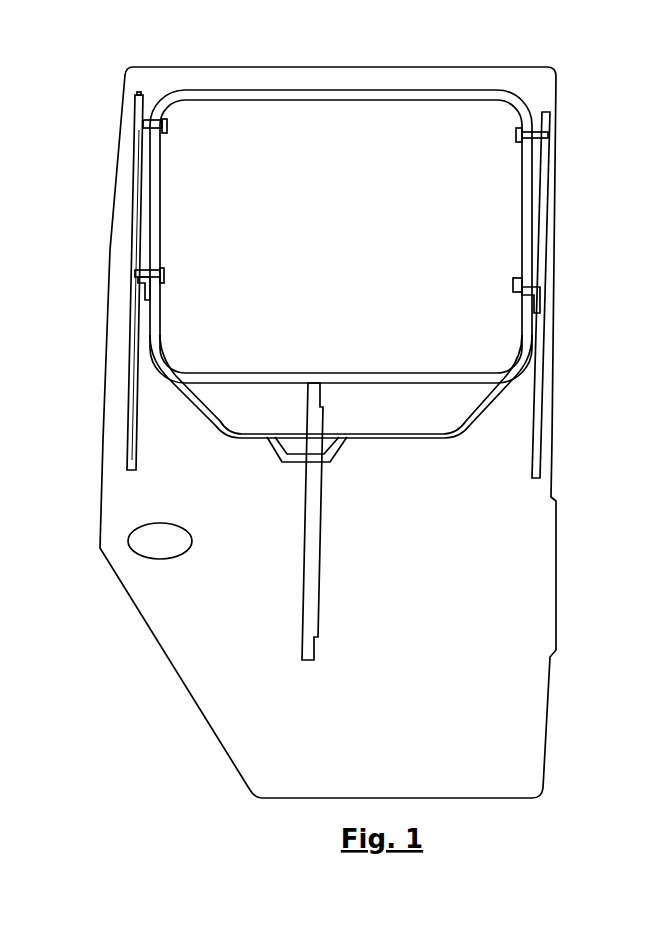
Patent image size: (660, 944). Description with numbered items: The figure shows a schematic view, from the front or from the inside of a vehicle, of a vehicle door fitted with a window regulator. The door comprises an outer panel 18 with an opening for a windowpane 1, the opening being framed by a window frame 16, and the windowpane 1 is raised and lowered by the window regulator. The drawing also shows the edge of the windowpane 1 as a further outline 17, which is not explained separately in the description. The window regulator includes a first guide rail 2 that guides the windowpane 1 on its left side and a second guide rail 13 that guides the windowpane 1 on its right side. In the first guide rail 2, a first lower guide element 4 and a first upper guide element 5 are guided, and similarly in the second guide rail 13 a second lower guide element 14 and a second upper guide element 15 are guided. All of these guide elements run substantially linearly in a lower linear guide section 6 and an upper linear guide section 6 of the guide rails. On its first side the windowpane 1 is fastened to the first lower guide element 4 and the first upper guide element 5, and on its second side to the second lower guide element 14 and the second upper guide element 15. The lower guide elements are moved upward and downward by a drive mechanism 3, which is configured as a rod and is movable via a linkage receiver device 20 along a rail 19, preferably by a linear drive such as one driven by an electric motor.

The windowpane 1 is at (336, 267).
The first guide rail 2 is at (125, 398).
The drive mechanism 3 is at (461, 432).
The first lower guide element 4 is at (143, 277).
The first upper guide element 5 is at (133, 127).
The linear guide section 6 is at (133, 204).
The second guide rail 13 is at (544, 202).
The second lower guide element 14 is at (543, 307).
The second upper guide element 15 is at (541, 138).
The window frame 16 is at (510, 83).
The window frame 17 is at (523, 104).
The outer panel 18 is at (458, 622).
The rail 19 is at (300, 608).
The linkage receiver device 20 is at (268, 447).